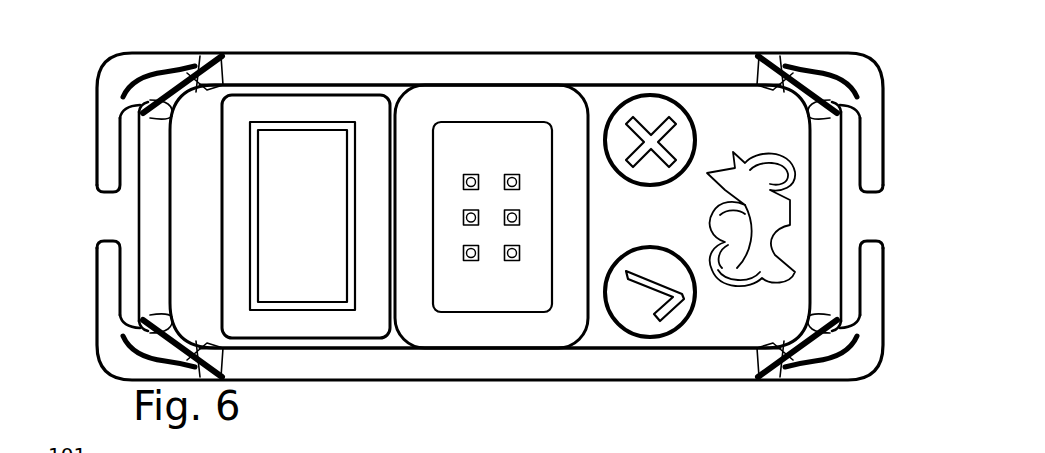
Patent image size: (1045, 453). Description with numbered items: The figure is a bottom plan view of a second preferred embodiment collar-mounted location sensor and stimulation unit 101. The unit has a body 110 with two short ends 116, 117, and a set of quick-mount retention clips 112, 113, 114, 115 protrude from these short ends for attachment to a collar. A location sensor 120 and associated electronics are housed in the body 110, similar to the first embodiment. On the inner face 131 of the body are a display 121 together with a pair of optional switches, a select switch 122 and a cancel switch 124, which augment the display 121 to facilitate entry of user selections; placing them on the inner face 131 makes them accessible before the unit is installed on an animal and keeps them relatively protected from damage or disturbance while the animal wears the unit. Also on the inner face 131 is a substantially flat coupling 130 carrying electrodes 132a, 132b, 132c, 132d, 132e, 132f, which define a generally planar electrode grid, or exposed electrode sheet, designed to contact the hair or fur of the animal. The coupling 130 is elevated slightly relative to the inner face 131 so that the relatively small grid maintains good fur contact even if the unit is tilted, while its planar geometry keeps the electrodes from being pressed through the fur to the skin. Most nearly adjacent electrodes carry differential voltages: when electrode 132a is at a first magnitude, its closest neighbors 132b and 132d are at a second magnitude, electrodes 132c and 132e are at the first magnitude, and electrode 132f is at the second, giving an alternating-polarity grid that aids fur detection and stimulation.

The collar-mounted location sensor and stimulation unit 101 is at (109, 45).
The body 110 is at (823, 50).
The quick-mount retention clip 112 is at (879, 311).
The quick-mount retention clip 113 is at (877, 118).
The quick-mount retention clip 114 is at (100, 320).
The quick-mount retention clip 115 is at (98, 143).
The short end 116 is at (843, 222).
The short end 117 is at (135, 237).
The location sensor 120 is at (290, 111).
The display 121 is at (327, 231).
The select switch 122 is at (645, 322).
The cancel switch 124 is at (683, 142).
The coupling 130 is at (451, 141).
The inner face 131 is at (761, 131).
The electrode 132a is at (470, 175).
The electrode 132b is at (513, 175).
The electrode 132c is at (517, 213).
The electrode 132d is at (468, 218).
The electrode 132e is at (470, 260).
The electrode 132f is at (513, 262).